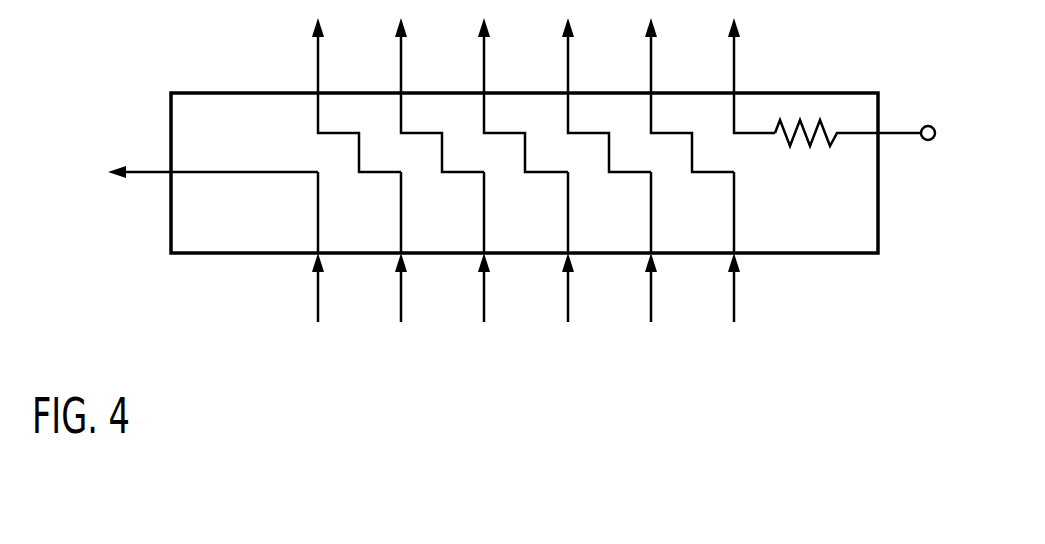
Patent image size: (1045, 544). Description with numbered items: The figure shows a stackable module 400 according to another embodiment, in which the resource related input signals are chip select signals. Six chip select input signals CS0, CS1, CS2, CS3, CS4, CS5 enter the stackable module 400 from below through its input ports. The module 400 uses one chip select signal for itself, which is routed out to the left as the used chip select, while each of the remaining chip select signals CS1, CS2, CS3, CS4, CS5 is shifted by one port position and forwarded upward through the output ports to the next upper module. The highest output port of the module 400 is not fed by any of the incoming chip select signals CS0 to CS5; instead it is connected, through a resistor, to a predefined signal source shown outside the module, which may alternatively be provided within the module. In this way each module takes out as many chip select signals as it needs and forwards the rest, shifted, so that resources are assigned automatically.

The stackable module 400 is at (856, 93).
The chip select input signal 0 CS0 is at (318, 266).
The chip select input signal 1 CS1 is at (401, 266).
The chip select input signal 2 CS2 is at (484, 266).
The chip select input signal 3 CS3 is at (568, 266).
The chip select input signal 4 CS4 is at (651, 266).
The chip select input signal 5 CS5 is at (734, 266).